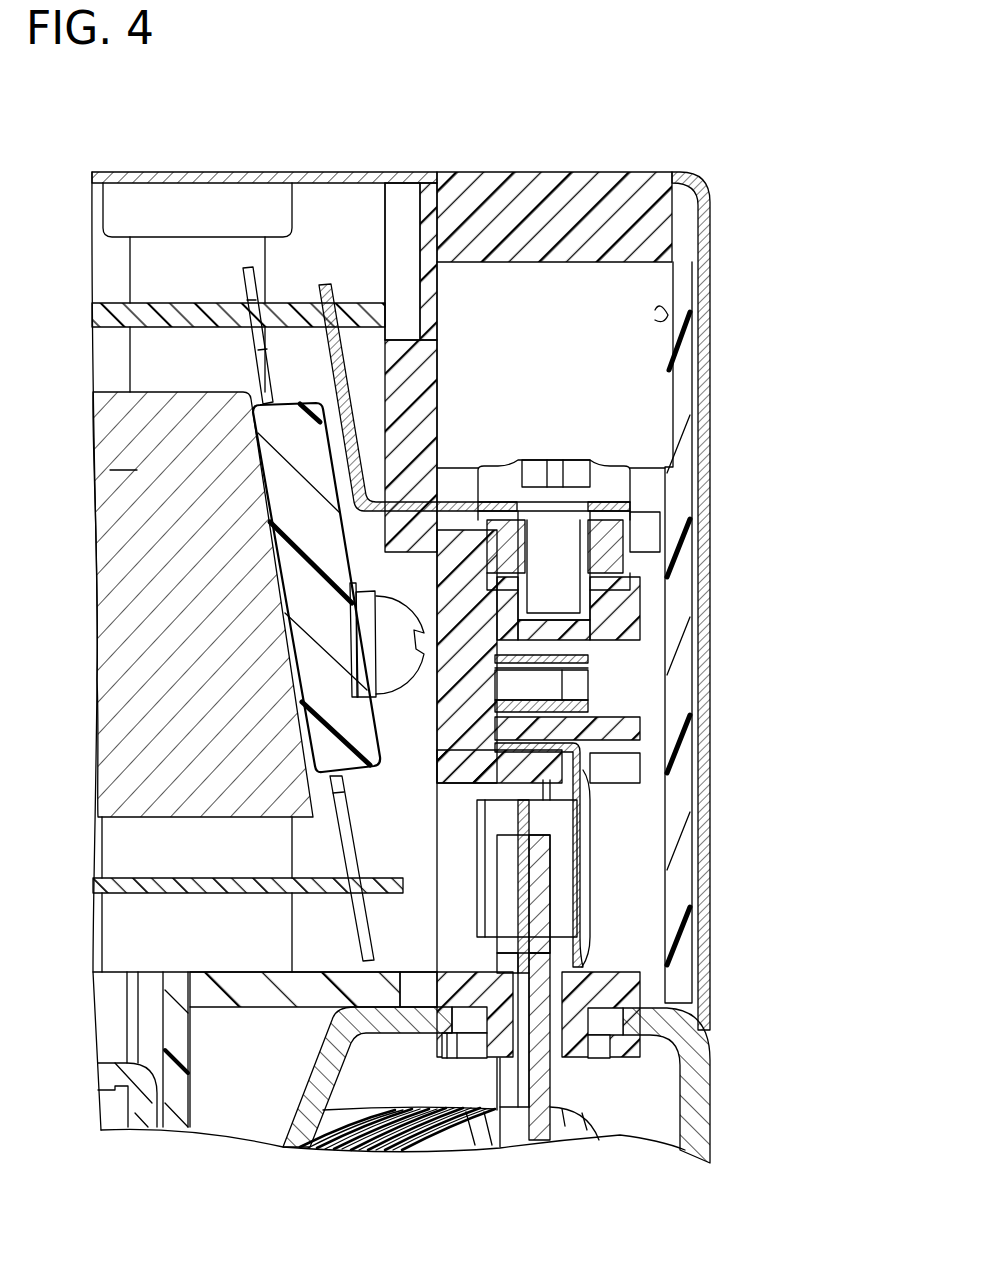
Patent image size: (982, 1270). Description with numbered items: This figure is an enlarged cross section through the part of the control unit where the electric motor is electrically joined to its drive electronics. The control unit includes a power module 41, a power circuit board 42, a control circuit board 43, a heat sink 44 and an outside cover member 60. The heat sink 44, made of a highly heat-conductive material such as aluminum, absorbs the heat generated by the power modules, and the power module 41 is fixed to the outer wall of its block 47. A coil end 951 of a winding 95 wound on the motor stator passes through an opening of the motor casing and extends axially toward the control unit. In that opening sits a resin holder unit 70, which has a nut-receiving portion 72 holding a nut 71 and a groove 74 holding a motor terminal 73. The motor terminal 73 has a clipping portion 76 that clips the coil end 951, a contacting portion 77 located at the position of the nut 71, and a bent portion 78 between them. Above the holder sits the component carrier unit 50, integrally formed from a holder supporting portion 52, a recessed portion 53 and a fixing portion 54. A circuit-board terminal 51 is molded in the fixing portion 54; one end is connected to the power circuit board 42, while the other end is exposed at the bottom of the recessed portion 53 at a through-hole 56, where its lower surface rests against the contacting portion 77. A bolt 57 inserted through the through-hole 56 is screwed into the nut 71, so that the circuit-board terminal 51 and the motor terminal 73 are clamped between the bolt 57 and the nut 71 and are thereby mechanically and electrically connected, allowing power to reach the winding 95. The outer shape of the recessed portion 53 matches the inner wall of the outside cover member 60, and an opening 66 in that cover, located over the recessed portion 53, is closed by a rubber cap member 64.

The power module 41 is at (283, 448).
The power circuit board 42 is at (283, 318).
The control circuit board 43 is at (137, 862).
The heat sink 44 is at (137, 570).
The block 47 is at (160, 518).
The component carrier unit 50 is at (650, 494).
The circuit-board terminal 51 is at (329, 300).
The holder supporting portion 52 is at (680, 858).
The recessed portion 53 is at (663, 315).
The fixing portion 54 is at (407, 340).
The through-hole 56 is at (625, 485).
The bolt 57 is at (545, 470).
The outside cover member 60 is at (197, 178).
The cap member 64 is at (545, 215).
The opening 66 is at (690, 185).
The holder unit 70 is at (620, 730).
The nut 71 is at (602, 552).
The nut-receiving portion 72 is at (615, 590).
The motor terminal 73 is at (580, 818).
The groove 74 is at (610, 695).
The clipping portion 76 is at (522, 890).
The contacting portion 77 is at (640, 520).
The bent portion 78 is at (610, 660).
The winding 95 is at (572, 1130).
The coil end 951 is at (539, 927).